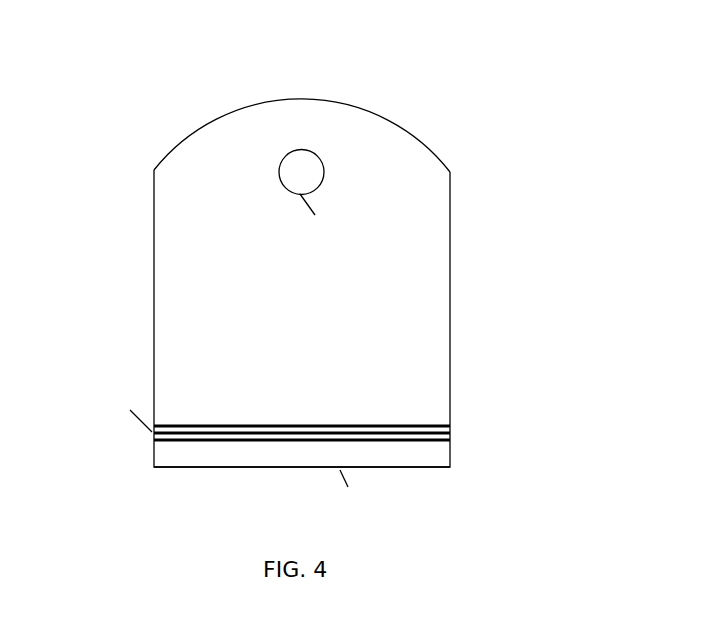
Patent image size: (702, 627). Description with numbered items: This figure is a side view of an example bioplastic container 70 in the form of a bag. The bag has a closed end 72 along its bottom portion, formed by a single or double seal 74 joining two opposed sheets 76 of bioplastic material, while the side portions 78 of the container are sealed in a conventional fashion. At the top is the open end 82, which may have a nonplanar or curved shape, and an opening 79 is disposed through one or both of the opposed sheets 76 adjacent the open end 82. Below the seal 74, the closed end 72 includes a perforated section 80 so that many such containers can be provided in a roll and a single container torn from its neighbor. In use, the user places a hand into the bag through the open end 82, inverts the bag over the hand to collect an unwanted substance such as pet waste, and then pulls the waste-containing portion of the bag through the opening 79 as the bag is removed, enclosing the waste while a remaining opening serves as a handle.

The bioplastic container 70 is at (429, 110).
The closed end 72 is at (172, 441).
The single or double seal 74 is at (420, 423).
The opposed sheets 76 is at (420, 280).
The side portions 78 is at (448, 330).
The opening 79 is at (305, 172).
The perforated section 80 is at (320, 456).
The open end 82 is at (197, 127).